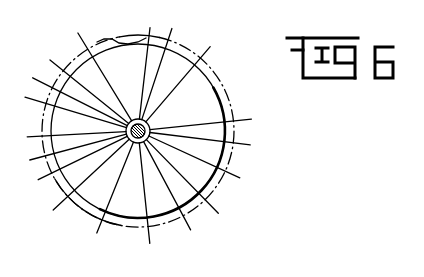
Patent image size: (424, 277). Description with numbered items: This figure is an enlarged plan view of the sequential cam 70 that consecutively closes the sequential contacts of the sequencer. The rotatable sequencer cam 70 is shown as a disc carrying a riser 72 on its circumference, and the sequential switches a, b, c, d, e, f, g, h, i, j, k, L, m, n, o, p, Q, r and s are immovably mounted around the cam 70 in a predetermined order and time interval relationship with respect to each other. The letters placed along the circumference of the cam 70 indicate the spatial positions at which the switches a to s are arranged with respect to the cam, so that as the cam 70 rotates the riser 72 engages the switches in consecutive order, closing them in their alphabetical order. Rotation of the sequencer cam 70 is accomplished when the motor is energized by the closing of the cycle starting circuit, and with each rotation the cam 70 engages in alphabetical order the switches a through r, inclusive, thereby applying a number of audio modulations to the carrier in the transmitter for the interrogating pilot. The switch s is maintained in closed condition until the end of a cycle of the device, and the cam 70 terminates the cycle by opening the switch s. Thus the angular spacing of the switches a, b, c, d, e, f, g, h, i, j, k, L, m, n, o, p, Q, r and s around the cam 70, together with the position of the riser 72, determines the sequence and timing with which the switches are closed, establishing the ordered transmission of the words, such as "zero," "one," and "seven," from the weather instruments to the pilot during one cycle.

The sequential switch a is at (149, 60).
The sequential switch b is at (164, 61).
The sequential switch c is at (184, 76).
The sequential switch e is at (211, 118).
The sequential switch f is at (206, 143).
The sequential switch g is at (203, 163).
The sequential switch h is at (192, 182).
The sequential switch i is at (174, 193).
The sequential switch j is at (146, 198).
The sequential switch k is at (114, 195).
The sequential switch L is at (86, 181).
The sequential switch m is at (76, 162).
The sequential switch n is at (70, 149).
The sequential switch o is at (70, 135).
The sequential switch p is at (70, 106).
The sequential switch Q is at (73, 95).
The sequential switch r is at (84, 85).
The sequential switch s is at (101, 72).
The sequential switch d is at (149, 131).
The sequential cam 70 is at (197, 92).
The riser 72 is at (121, 29).